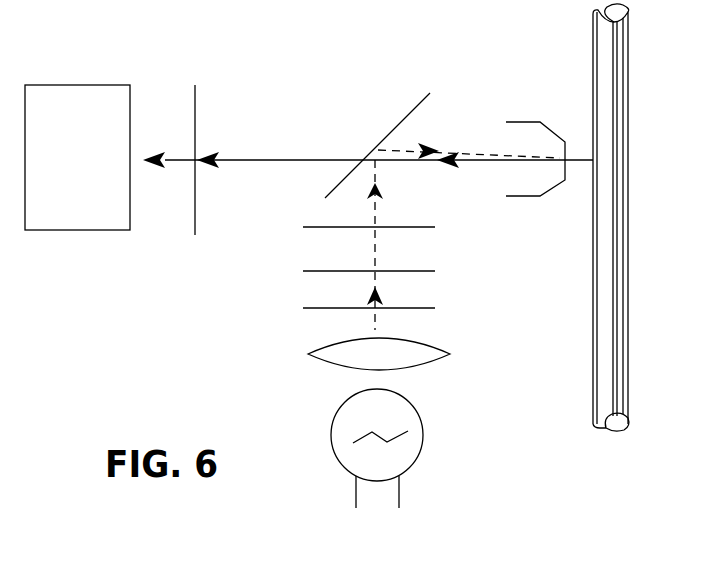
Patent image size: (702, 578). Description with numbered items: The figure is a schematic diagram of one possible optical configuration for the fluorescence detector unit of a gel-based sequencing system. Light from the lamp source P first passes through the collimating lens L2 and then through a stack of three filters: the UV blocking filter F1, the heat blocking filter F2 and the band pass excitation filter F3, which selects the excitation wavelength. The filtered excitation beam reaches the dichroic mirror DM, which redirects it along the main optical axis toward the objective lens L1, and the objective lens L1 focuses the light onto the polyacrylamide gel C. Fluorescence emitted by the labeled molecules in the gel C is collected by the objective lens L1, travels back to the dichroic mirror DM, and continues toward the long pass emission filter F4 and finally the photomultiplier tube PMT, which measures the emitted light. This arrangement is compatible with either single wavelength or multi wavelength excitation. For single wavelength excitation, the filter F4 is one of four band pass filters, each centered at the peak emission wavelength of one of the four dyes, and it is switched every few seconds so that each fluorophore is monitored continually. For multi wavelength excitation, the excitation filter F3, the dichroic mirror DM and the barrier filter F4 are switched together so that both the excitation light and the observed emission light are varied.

The photomultiplier tube PMT is at (77, 157).
The long pass emission filter F4 is at (215, 160).
The dichroic mirror DM is at (377, 145).
The band pass excitation filter F3 is at (395, 226).
The heat blocking filter F2 is at (395, 270).
The UV blocking filter F1 is at (395, 308).
The collimating lens L2 is at (397, 354).
The lamp source P is at (396, 448).
The objective lens L1 is at (538, 173).
The polyacrylamide gel C is at (611, 217).